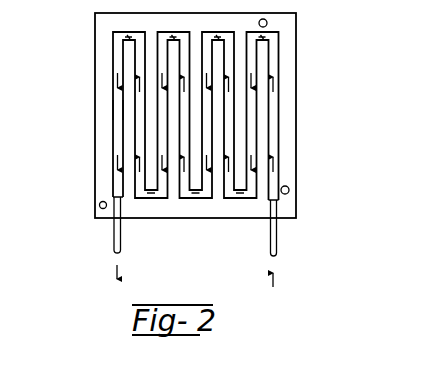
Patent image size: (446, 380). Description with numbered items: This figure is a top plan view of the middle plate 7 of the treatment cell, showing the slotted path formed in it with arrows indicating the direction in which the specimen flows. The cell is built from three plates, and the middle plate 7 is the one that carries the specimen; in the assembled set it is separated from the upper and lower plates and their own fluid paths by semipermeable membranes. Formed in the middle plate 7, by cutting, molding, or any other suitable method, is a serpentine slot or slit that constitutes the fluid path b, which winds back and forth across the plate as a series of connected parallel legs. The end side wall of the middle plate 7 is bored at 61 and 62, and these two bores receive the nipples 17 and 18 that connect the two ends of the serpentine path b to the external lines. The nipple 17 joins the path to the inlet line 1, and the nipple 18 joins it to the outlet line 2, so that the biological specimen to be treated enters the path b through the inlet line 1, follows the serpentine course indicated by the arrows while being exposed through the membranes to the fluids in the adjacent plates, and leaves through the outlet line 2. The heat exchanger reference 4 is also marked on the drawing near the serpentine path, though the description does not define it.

The inlet line 1 is at (277, 248).
The outlet line 2 is at (114, 248).
The serpentine heat exchange passage 4 is at (253, 150).
The middle plate 7 is at (296, 113).
The nipple 17 is at (277, 227).
The nipple 18 is at (114, 223).
The bore 61 is at (113, 213).
The bore 62 is at (277, 209).
The fluid path b is at (113, 110).